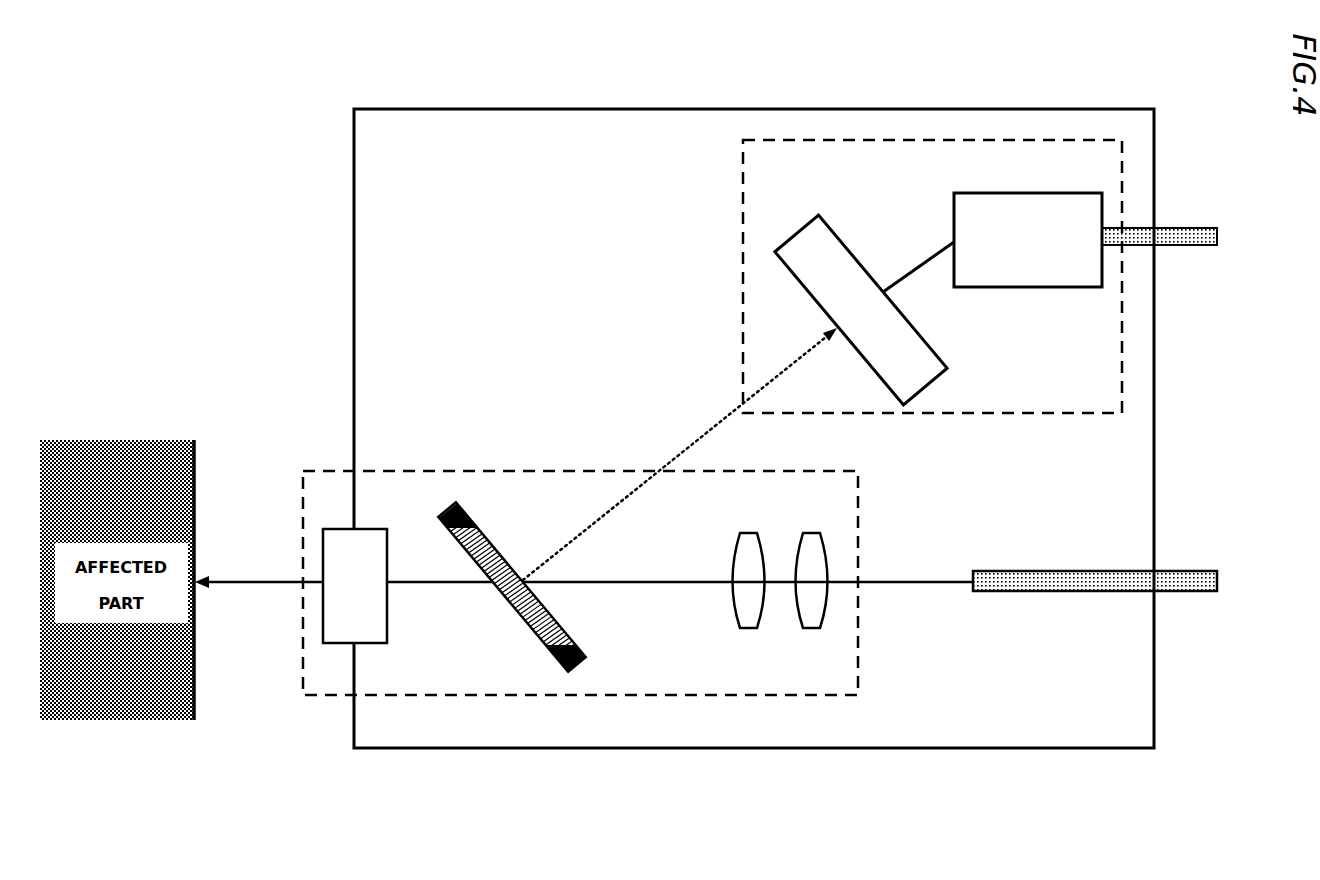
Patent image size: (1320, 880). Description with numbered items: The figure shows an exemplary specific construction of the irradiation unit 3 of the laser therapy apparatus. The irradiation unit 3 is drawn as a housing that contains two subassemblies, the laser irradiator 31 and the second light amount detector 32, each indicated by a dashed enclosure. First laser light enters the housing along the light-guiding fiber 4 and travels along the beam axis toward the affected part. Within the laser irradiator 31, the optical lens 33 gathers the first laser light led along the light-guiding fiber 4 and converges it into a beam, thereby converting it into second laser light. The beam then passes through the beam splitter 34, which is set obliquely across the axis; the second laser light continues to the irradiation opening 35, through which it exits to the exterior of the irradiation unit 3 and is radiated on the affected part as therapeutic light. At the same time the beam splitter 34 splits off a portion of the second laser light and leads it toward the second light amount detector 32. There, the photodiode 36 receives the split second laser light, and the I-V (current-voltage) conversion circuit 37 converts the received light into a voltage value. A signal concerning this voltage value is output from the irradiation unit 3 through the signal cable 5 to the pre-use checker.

The irradiation unit 3 is at (1120, 108).
The light-guiding fiber 4 is at (1178, 572).
The signal cable 5 is at (1186, 228).
The laser irradiator 31 is at (860, 498).
The second light amount detector 32 is at (743, 172).
The optical lens 33 is at (840, 630).
The beam splitter 34 is at (470, 529).
The irradiation opening 35 is at (370, 540).
The photodiode 36 is at (822, 227).
The I-V (current-voltage) conversion circuit 37 is at (1058, 206).